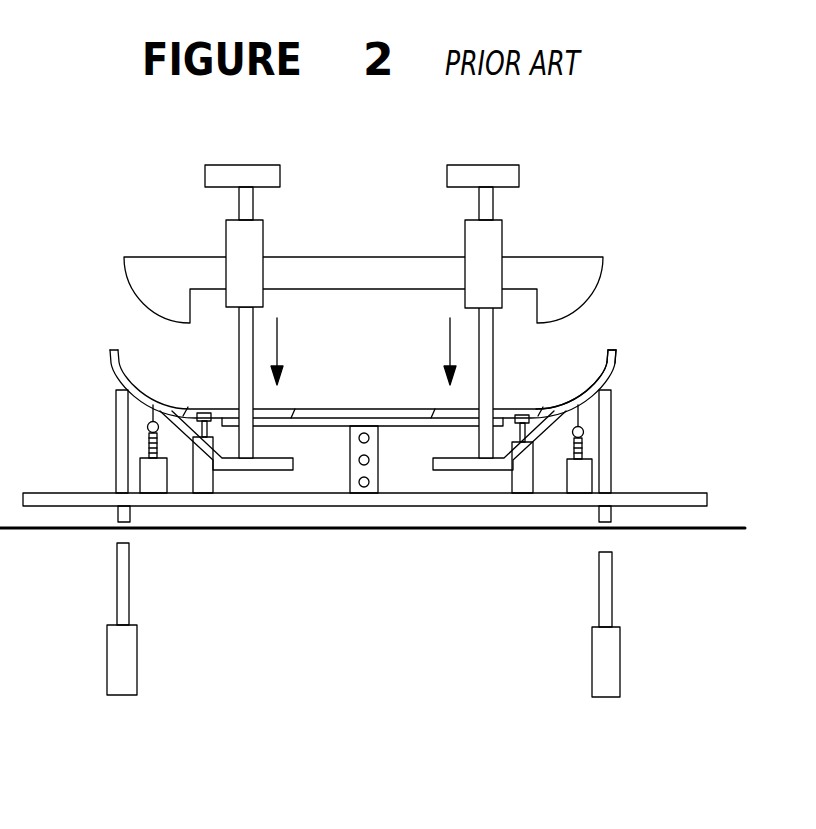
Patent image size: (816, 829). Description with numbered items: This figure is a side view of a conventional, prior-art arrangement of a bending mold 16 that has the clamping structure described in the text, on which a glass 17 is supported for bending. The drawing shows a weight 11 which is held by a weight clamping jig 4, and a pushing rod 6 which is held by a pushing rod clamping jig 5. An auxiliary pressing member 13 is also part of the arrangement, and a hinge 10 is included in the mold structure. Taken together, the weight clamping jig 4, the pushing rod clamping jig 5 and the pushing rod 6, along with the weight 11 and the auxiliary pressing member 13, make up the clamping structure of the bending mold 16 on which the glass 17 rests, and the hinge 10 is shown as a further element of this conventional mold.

The weight clamping jig 4 is at (226, 235).
The pushing rod clamping jig 5 is at (613, 475).
The pushing rod 6 is at (110, 390).
The hinge 10 is at (584, 436).
The weight 11 is at (280, 178).
The auxiliary pressing member 13 is at (602, 266).
The bending mold 16 is at (615, 362).
The glass 17 is at (607, 366).